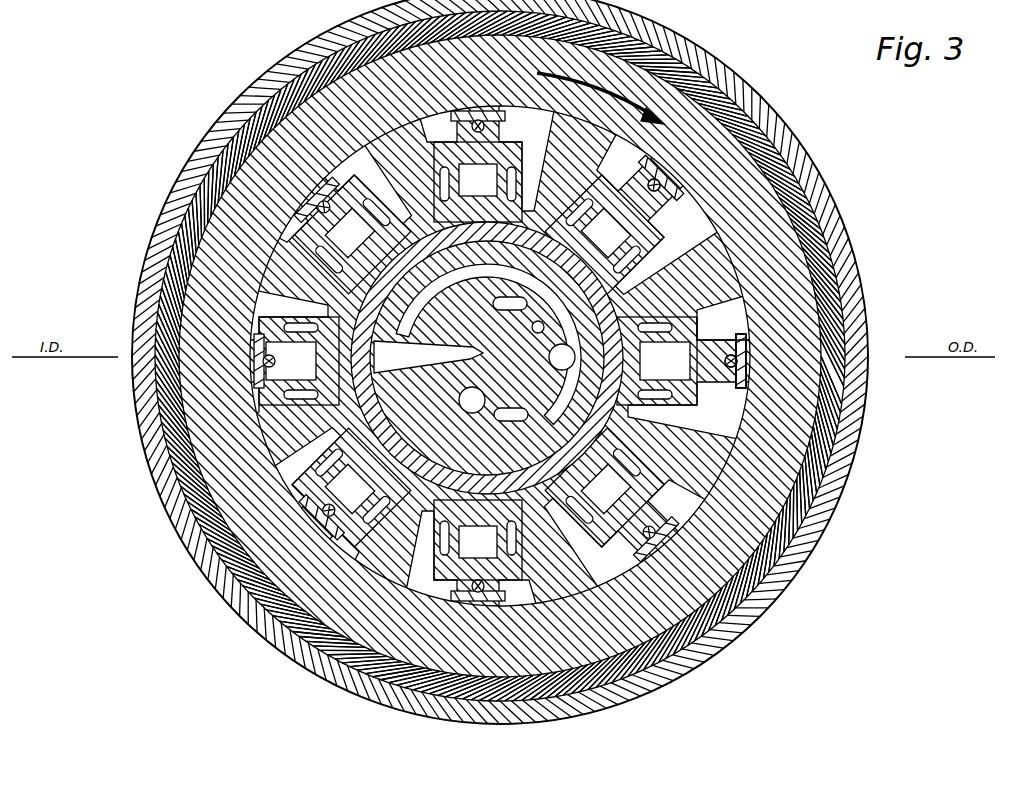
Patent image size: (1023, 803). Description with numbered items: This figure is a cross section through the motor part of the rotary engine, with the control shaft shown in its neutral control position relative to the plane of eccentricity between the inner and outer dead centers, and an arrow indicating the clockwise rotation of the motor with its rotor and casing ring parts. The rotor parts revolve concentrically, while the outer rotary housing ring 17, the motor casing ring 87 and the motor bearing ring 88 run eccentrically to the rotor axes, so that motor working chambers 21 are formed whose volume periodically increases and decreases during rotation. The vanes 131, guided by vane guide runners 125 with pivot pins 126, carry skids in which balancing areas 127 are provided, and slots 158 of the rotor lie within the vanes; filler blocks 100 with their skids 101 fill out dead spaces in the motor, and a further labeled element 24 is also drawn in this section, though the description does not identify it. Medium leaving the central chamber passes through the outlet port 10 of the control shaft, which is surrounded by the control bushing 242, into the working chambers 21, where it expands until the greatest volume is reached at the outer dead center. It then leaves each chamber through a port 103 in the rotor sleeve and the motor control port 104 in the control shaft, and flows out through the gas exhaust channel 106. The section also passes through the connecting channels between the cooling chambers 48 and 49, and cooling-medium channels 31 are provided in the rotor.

The outlet port of the central chamber 10 is at (384, 341).
The outer rotary housing ring 17 is at (840, 392).
The motor working chambers 21 is at (672, 199).
The pole piece 24 is at (588, 442).
The cooling-medium channels in rotor 31 is at (632, 244).
The cooling chamber 48 is at (553, 371).
The cooling chamber 49 is at (495, 413).
The motor casing ring 87 is at (832, 463).
The motor bearing ring 88 is at (822, 437).
The filler blocks 100 is at (748, 330).
The skids of filler blocks 101 is at (712, 290).
The ports in rotor sleeve 103 is at (428, 480).
The motor control port 104 is at (380, 421).
The gas exhaust channel 106 is at (463, 386).
The vane guide runners 125 is at (752, 346).
The pivot pins 126 is at (757, 359).
The balancing areas in vane skids 127 is at (752, 368).
The vanes 131 is at (592, 530).
The slots of rotor within vanes 158 is at (616, 208).
The control bushing 242 is at (585, 207).